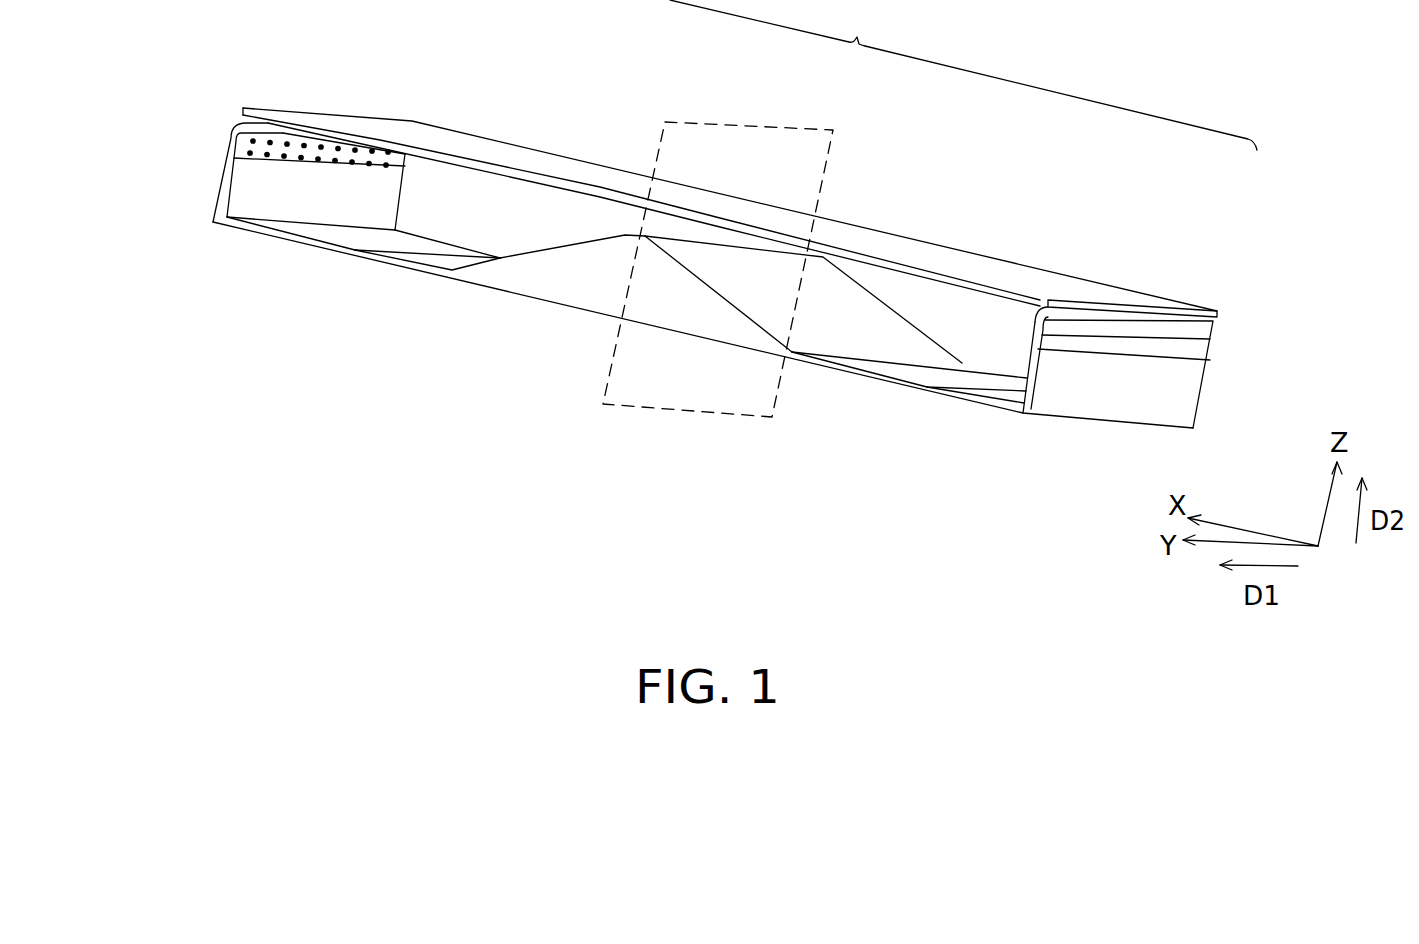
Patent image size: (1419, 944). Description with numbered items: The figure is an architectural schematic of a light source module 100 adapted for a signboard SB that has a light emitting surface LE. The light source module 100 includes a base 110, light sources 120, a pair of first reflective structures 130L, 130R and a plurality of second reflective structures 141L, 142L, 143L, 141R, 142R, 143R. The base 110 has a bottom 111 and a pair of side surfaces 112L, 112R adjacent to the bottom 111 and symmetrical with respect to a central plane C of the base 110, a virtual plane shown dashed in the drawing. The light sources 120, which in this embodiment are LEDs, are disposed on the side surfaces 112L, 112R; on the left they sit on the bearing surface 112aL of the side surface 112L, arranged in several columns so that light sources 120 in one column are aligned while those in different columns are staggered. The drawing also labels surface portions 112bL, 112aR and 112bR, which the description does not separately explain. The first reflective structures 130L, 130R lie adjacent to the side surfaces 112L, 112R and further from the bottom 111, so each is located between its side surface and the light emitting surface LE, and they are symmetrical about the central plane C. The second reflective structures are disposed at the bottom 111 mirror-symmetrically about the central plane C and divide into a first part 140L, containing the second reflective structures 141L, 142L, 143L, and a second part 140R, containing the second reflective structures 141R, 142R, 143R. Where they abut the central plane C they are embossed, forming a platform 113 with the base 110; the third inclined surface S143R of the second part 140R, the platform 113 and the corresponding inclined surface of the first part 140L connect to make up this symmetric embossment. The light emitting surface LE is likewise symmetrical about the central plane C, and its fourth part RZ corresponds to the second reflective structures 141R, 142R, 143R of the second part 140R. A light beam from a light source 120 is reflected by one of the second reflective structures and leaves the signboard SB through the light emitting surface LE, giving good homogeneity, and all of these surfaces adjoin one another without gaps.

The light source module 100 is at (213, 603).
The base 110 is at (220, 268).
The bottom 111 is at (899, 292).
The signboard SB is at (360, 121).
The light emitting surface LE is at (529, 196).
The side surface 112L is at (565, 46).
The bearing surface 112aL is at (417, 167).
The left side surface 112bL is at (400, 205).
The side surface 112R is at (1135, 166).
The right end surface 112aR is at (1027, 330).
The right side surface 112bR is at (1027, 362).
The platform 113 is at (653, 232).
The central plane C is at (745, 183).
The fourth part RZ is at (963, 75).
The light source 120 is at (250, 141).
The first reflective structure 130L is at (240, 122).
The first reflective structure 130R is at (1042, 304).
The first part 140L is at (485, 344).
The second reflective structure 141L is at (263, 232).
The second reflective structure 142L is at (384, 258).
The second reflective structure 143L is at (538, 275).
The second part 140R is at (1040, 489).
The second reflective structure 141R is at (997, 403).
The second reflective structure 142R is at (853, 373).
The second reflective structure 143R is at (731, 330).
The third inclined surface S143R is at (816, 303).